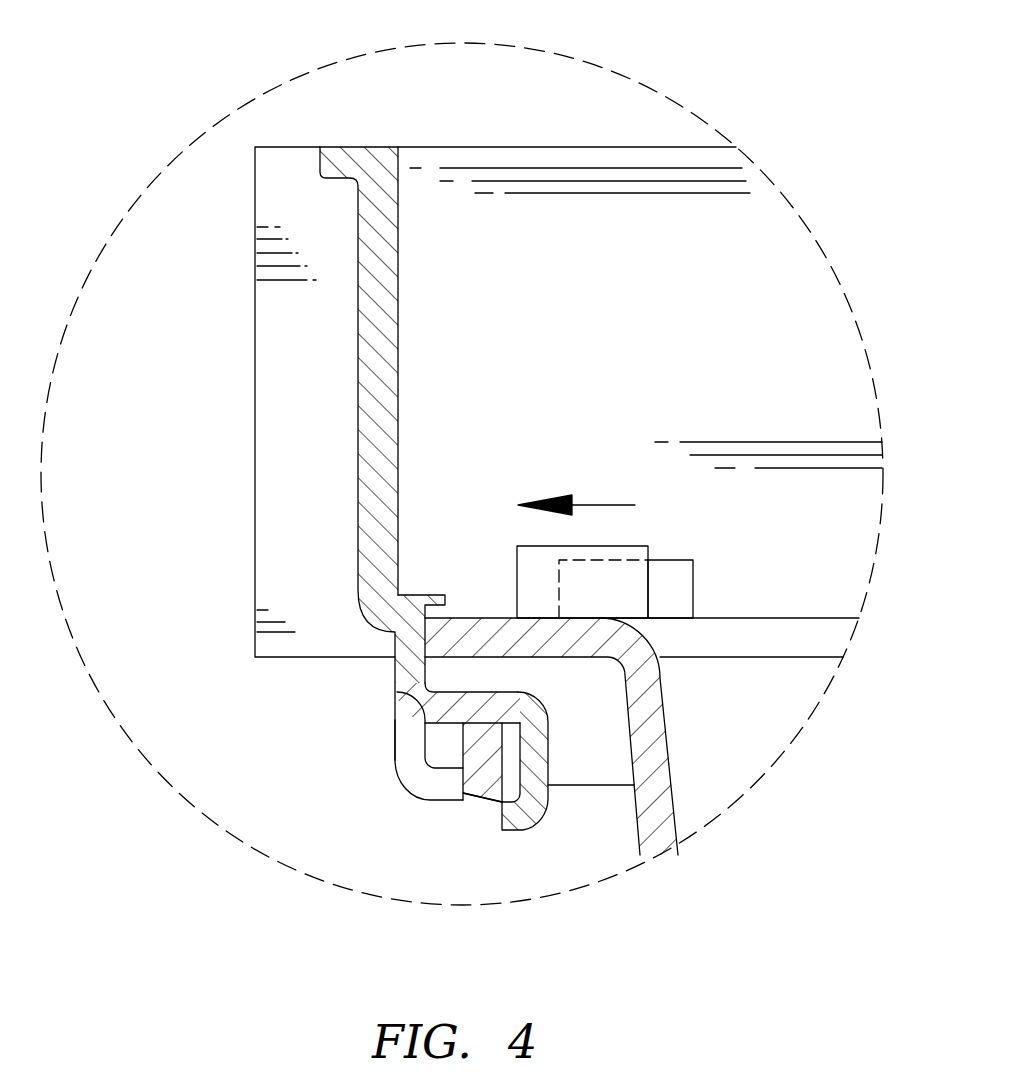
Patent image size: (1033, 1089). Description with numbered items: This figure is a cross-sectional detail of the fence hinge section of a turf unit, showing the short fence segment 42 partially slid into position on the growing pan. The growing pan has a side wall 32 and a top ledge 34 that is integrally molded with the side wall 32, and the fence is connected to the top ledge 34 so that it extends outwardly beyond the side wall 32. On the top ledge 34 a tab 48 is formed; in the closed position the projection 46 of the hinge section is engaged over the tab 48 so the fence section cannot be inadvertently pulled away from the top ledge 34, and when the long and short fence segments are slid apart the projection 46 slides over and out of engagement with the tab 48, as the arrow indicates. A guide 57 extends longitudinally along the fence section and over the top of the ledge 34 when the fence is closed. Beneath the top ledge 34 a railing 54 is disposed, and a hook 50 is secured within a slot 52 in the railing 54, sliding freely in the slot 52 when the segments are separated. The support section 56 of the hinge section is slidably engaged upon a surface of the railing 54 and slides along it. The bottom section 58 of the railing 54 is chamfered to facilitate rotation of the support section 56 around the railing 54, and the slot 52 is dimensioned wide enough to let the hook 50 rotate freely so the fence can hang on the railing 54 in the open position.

The short fence segment 42 is at (576, 147).
The projection 46 is at (517, 550).
The tab 48 is at (693, 590).
The guide 57 is at (437, 596).
The slot 52 is at (485, 694).
The top ledge 34 is at (580, 660).
The side wall 32 is at (670, 760).
The hook 50 is at (540, 815).
The railing 54 is at (472, 778).
The support section 56 is at (402, 780).
The bottom section 58 is at (493, 800).